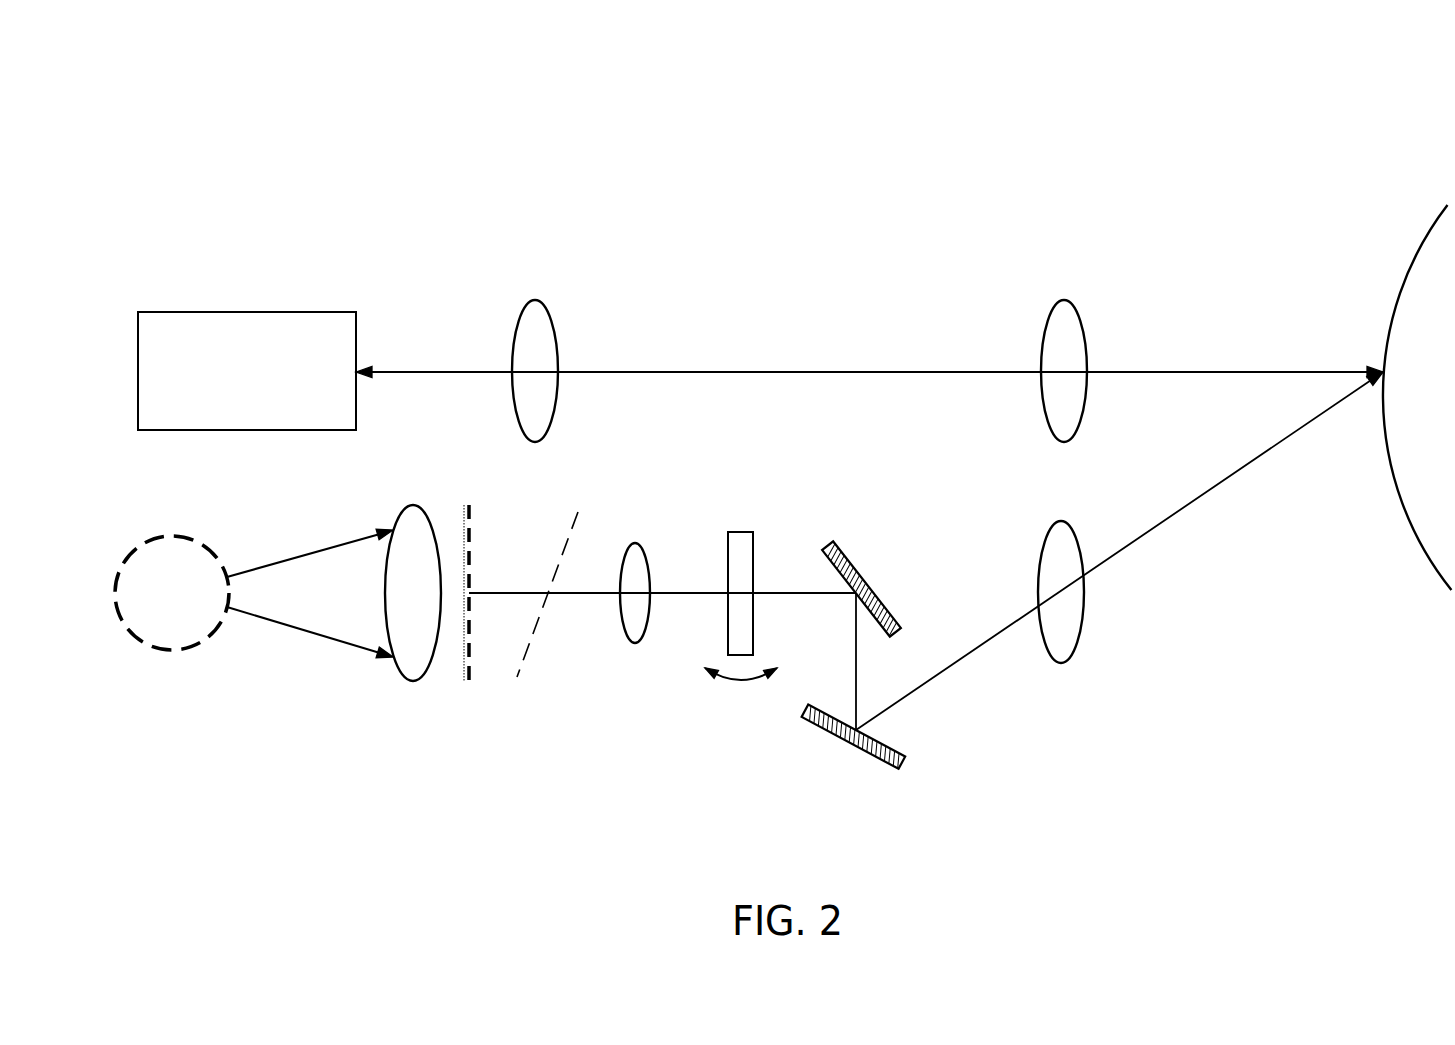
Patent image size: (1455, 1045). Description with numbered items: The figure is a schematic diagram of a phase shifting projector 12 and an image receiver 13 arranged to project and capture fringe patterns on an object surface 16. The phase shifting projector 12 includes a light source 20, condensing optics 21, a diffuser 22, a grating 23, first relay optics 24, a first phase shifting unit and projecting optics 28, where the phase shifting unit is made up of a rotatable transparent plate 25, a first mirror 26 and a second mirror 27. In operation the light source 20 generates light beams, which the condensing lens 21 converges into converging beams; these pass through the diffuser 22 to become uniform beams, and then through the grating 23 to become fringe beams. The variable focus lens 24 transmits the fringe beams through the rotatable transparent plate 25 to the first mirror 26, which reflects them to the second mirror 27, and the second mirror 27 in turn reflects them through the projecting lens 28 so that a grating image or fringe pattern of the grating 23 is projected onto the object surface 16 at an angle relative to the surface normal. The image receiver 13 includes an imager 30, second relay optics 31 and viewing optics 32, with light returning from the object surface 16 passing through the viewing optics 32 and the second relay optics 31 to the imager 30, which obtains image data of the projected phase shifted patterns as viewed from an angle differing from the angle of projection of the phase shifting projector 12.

The phase shifting projector 12 is at (560, 753).
The image receiver 13 is at (1265, 105).
The object surface 16 is at (1403, 285).
The light source 20 is at (155, 648).
The condensing optics 21 is at (413, 682).
The diffuser 22 is at (470, 652).
The grating 23 is at (568, 538).
The first relay optics 24 is at (632, 643).
The rotatable transparent plate 25 is at (740, 532).
The first mirror 26 is at (860, 570).
The second mirror 27 is at (823, 733).
The projecting optics 28 is at (1060, 663).
The imager 30 is at (247, 312).
The second relay optics 31 is at (538, 300).
The viewing optics 32 is at (1066, 300).